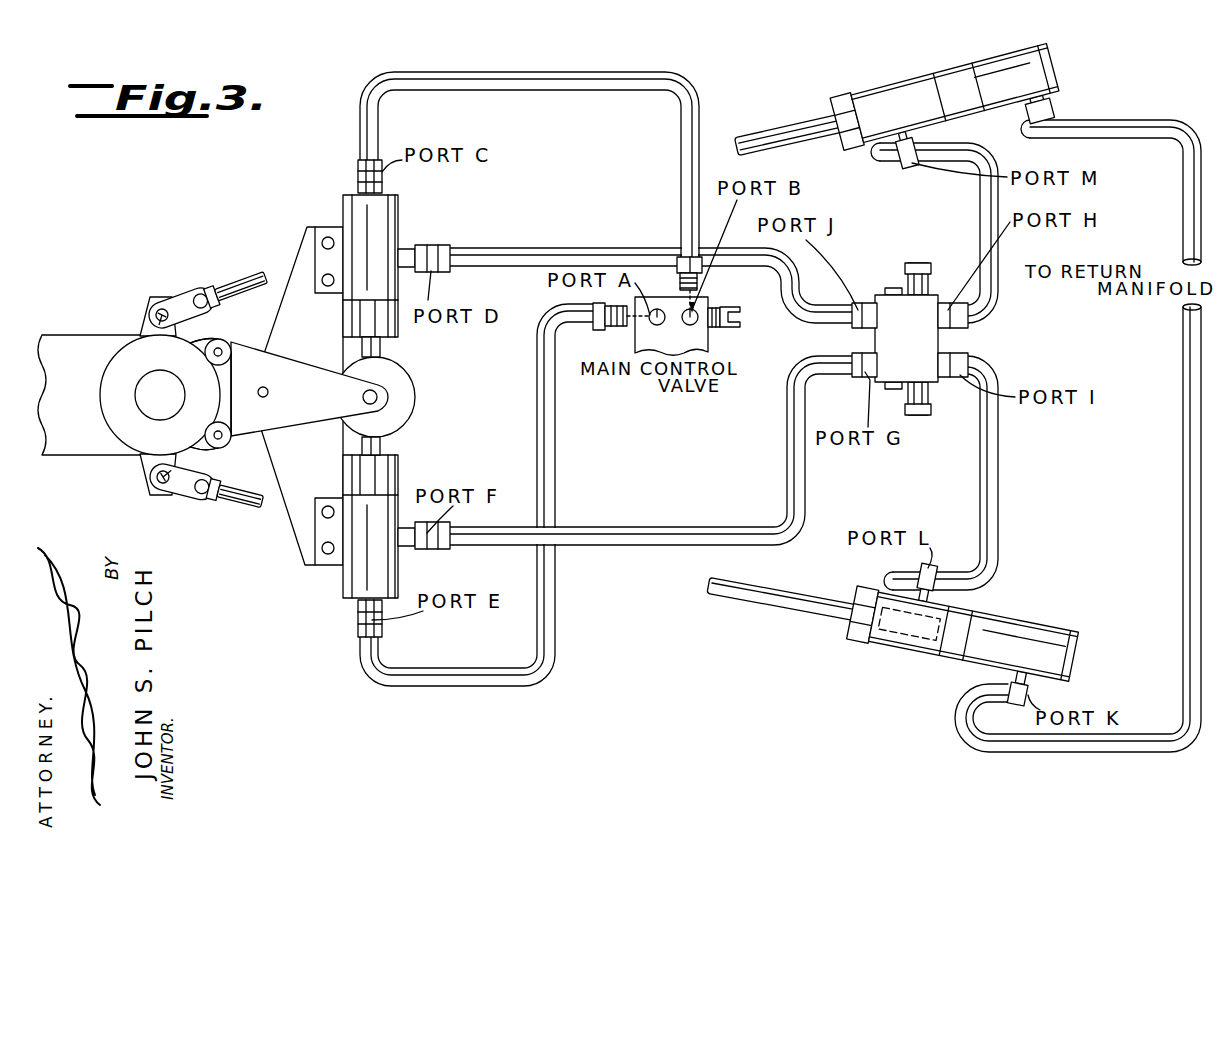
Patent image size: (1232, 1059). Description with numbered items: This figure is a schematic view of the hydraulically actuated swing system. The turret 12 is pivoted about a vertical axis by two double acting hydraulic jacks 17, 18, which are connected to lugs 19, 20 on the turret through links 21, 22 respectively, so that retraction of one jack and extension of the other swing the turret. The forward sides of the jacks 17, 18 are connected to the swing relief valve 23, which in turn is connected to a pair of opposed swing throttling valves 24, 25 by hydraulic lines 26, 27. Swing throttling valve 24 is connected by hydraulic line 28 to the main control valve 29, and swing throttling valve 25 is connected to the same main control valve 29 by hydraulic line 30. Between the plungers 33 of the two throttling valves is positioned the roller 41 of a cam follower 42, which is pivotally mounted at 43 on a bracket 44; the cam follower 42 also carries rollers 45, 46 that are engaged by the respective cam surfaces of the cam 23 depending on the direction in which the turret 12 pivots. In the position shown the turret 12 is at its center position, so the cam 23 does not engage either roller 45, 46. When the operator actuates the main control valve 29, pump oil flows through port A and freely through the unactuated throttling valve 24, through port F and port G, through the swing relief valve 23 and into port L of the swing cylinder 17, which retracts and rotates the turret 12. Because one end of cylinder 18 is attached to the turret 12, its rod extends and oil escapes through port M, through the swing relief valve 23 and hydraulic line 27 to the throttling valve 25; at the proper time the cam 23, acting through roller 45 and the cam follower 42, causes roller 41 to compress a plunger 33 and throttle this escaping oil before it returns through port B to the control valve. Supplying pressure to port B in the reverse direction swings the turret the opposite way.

The turret 12 is at (82, 364).
The double acting hydraulic jack 17 is at (880, 647).
The double acting hydraulic jack 18 is at (865, 85).
The lug 19 is at (150, 462).
The lug 20 is at (145, 330).
The link 21 is at (158, 492).
The link 22 is at (175, 294).
The swing relief valve 23 is at (136, 386).
The swing throttling valve 24 is at (396, 480).
The swing throttling valve 25 is at (390, 215).
The hydraulic line 26 is at (623, 530).
The hydraulic line 27 is at (524, 252).
The hydraulic line 28 is at (446, 672).
The main control valve 29 is at (718, 338).
The hydraulic line 30 is at (522, 73).
The plunger 33 is at (383, 351).
The roller 41 is at (403, 387).
The cam follower 42 is at (318, 397).
The pivot 43 is at (263, 387).
The bracket 44 is at (316, 327).
The roller 45 is at (226, 340).
The roller 46 is at (221, 446).